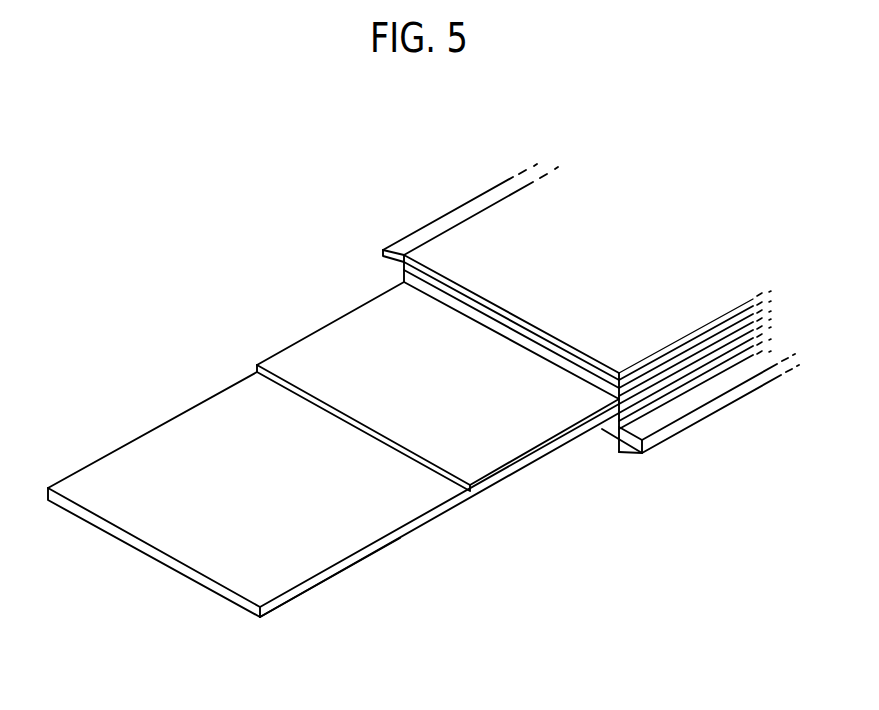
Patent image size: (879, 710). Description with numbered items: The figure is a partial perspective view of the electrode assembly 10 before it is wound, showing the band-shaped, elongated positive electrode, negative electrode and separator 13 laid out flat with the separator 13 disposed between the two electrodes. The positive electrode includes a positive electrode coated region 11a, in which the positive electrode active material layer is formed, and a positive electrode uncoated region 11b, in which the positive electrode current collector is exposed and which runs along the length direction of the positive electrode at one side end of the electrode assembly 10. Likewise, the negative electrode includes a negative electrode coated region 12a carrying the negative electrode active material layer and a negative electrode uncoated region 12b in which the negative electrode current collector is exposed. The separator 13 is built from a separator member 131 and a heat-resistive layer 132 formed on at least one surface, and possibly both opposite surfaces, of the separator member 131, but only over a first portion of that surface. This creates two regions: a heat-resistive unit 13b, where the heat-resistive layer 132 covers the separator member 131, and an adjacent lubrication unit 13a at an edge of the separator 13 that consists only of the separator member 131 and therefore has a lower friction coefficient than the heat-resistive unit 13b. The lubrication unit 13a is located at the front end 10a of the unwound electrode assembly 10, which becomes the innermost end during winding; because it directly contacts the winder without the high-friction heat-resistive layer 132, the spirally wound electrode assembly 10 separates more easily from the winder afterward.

The electrode assembly 10 is at (295, 175).
The front end 10a is at (357, 600).
The positive electrode coated region 11a is at (481, 219).
The positive electrode uncoated region 11b is at (422, 240).
The negative electrode coated region 12a is at (602, 443).
The negative electrode uncoated region 12b is at (682, 418).
The separator 13 is at (279, 350).
The lubrication unit 13a is at (210, 408).
The heat-resistive unit 13b is at (357, 318).
The separator member 131 is at (491, 489).
The heat-resistive layer 132 is at (531, 474).